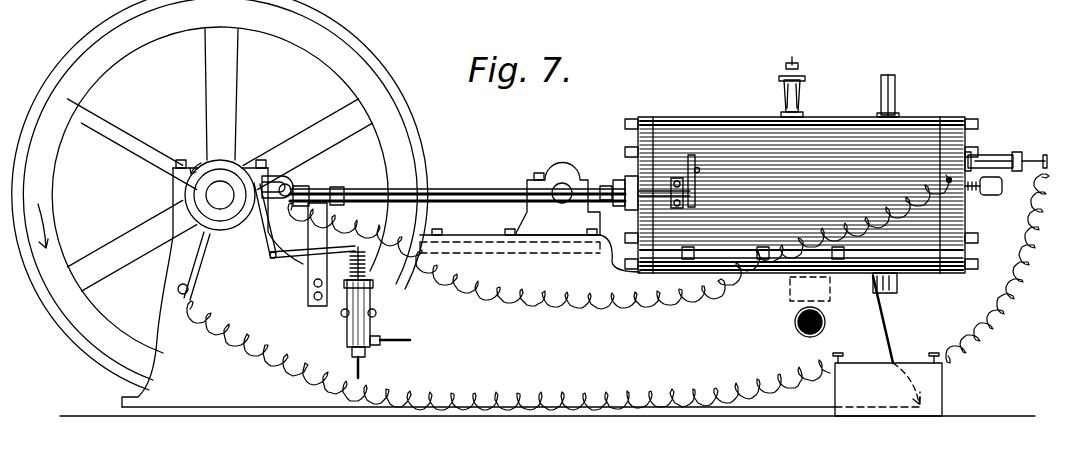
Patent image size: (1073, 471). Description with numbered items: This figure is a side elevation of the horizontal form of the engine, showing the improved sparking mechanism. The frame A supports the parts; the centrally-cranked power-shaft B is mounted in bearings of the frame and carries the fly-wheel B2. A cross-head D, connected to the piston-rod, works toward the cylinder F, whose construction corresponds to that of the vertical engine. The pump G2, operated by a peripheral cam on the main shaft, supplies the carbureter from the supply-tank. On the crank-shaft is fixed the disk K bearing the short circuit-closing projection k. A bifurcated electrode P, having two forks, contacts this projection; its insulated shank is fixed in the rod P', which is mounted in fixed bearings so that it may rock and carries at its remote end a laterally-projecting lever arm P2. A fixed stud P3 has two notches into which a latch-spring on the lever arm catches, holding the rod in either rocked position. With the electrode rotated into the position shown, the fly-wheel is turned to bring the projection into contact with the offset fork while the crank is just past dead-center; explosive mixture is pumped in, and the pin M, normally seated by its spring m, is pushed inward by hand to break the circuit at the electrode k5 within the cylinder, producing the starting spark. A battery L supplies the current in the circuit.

The fly-wheel B2 is at (88, 337).
The power-shaft B is at (220, 195).
The disk K is at (238, 161).
The circuit-closing projection k is at (266, 177).
The bifurcated electrode P is at (305, 183).
The rod P' is at (457, 177).
The cross-head D is at (576, 199).
The cylinder F is at (742, 80).
The lever arm P2 is at (691, 170).
The fixed stud P3 is at (700, 172).
The pump G2 is at (358, 333).
The frame A is at (547, 288).
The battery L is at (887, 384).
The spring m is at (975, 178).
The pin M is at (991, 196).
The electrode k5 is at (1020, 164).